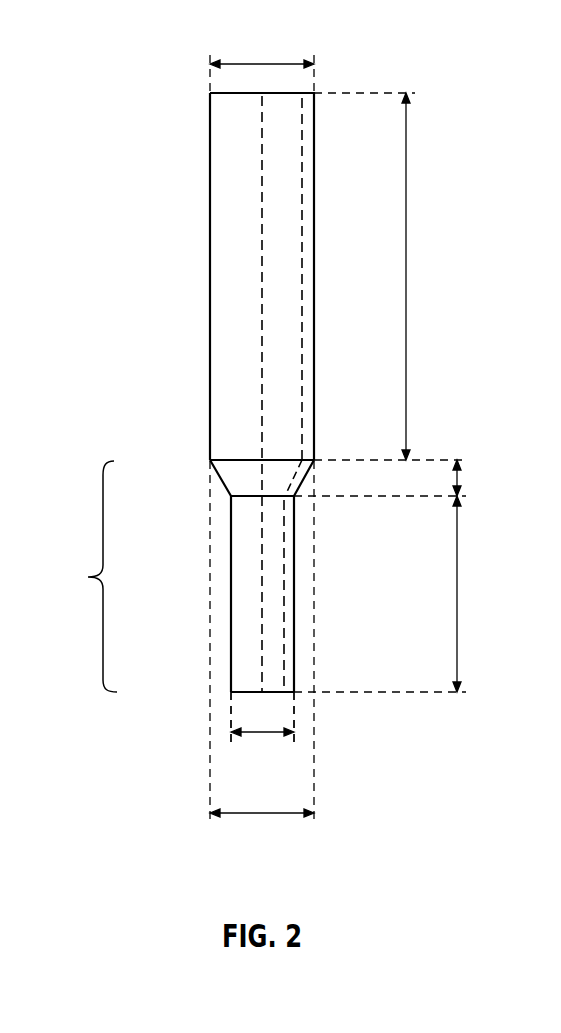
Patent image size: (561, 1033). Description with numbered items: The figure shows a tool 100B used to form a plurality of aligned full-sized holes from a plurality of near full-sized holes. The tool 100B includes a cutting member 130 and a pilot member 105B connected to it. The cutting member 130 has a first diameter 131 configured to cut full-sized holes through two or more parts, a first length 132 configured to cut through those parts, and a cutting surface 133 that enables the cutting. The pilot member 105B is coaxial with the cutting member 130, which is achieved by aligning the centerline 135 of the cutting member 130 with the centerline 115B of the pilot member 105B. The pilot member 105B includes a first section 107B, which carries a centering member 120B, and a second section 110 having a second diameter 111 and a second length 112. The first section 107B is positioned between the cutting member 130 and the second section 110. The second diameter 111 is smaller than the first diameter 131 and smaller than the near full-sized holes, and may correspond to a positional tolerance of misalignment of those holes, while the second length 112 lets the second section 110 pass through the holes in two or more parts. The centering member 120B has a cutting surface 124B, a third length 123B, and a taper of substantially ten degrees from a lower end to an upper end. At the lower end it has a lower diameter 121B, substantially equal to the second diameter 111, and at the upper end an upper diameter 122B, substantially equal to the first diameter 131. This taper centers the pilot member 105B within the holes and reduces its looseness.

The tool 100B is at (440, 58).
The cutting member 130 is at (210, 118).
The first diameter 131 is at (229, 63).
The first length 132 is at (407, 268).
The cutting surface 133 is at (272, 458).
The centerline 135 is at (262, 275).
The centering member 120B is at (236, 483).
The cutting surface 124B is at (224, 489).
The third length 123B is at (457, 474).
The first section 107B is at (303, 492).
The pilot member 105B is at (72, 576).
The centerline 115B is at (259, 598).
The second length 112 is at (457, 594).
The second section 110 is at (287, 694).
The second diameter 111 is at (276, 735).
The lower diameter 121B is at (346, 750).
The upper diameter 122B is at (299, 817).